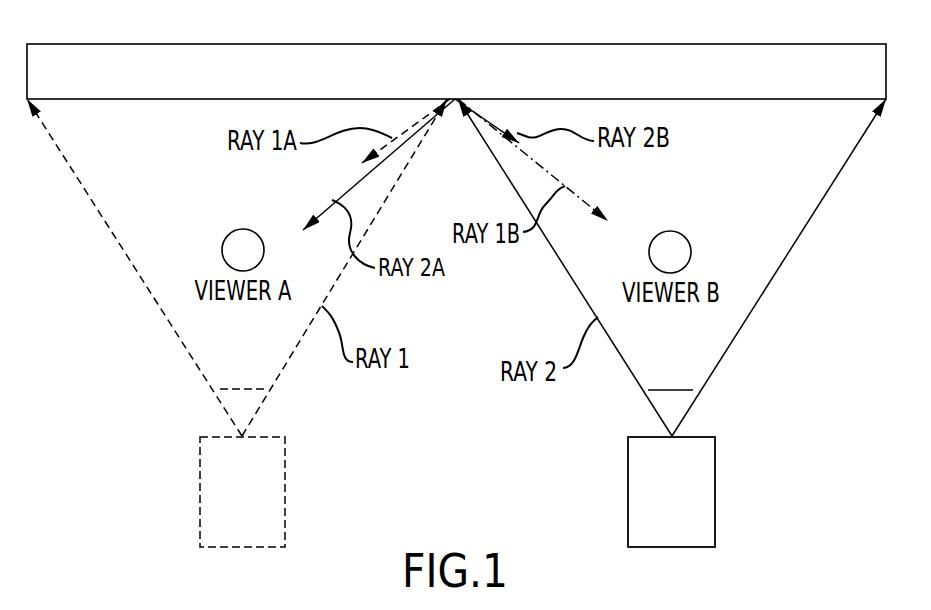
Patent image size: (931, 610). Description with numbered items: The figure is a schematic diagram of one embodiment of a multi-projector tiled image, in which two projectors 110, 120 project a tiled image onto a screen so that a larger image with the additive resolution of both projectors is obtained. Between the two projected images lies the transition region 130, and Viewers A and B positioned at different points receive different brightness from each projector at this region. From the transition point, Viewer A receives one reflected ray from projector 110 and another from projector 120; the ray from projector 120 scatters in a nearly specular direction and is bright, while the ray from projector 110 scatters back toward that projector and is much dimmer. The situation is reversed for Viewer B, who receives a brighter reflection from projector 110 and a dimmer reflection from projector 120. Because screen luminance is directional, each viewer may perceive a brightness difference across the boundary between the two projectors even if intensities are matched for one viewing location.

The transition region 130 is at (467, 99).
The projector 110 is at (260, 525).
The projector 120 is at (690, 526).